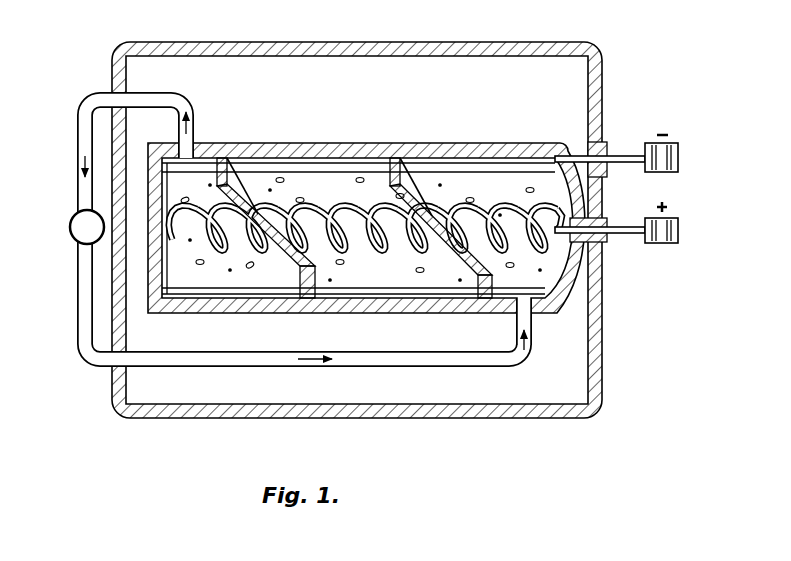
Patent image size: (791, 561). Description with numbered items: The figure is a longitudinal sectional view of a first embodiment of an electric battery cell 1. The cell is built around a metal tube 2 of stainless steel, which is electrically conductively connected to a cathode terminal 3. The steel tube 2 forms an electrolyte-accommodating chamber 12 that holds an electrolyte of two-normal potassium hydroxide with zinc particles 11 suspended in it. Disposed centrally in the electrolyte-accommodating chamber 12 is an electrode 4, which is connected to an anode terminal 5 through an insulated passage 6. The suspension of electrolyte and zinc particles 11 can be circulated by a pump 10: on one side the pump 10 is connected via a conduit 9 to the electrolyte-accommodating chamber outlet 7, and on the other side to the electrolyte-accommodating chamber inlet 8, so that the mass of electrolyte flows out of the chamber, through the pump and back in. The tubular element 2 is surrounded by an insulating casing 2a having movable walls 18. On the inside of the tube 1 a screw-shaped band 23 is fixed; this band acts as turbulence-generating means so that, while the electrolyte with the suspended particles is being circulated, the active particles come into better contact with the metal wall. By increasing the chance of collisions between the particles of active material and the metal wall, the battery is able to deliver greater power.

The electric battery cell 1 is at (326, 140).
The metal tube 2 is at (444, 143).
The insulating casing 2a is at (434, 40).
The cathode terminal 3 is at (678, 153).
The electrode 4 is at (382, 143).
The anode terminal 5 is at (672, 240).
The insulated passage 6 is at (606, 243).
The electrolyte-accommodating chamber outlet 7 is at (198, 143).
The electrolyte-accommodating chamber inlet 8 is at (540, 318).
The conduit 9 is at (218, 358).
The pump 10 is at (82, 225).
The zinc particles 11 is at (362, 272).
The electrolyte-accommodating chamber 12 is at (487, 167).
The movable walls 18 is at (285, 42).
The screw-shaped band 23 is at (420, 157).